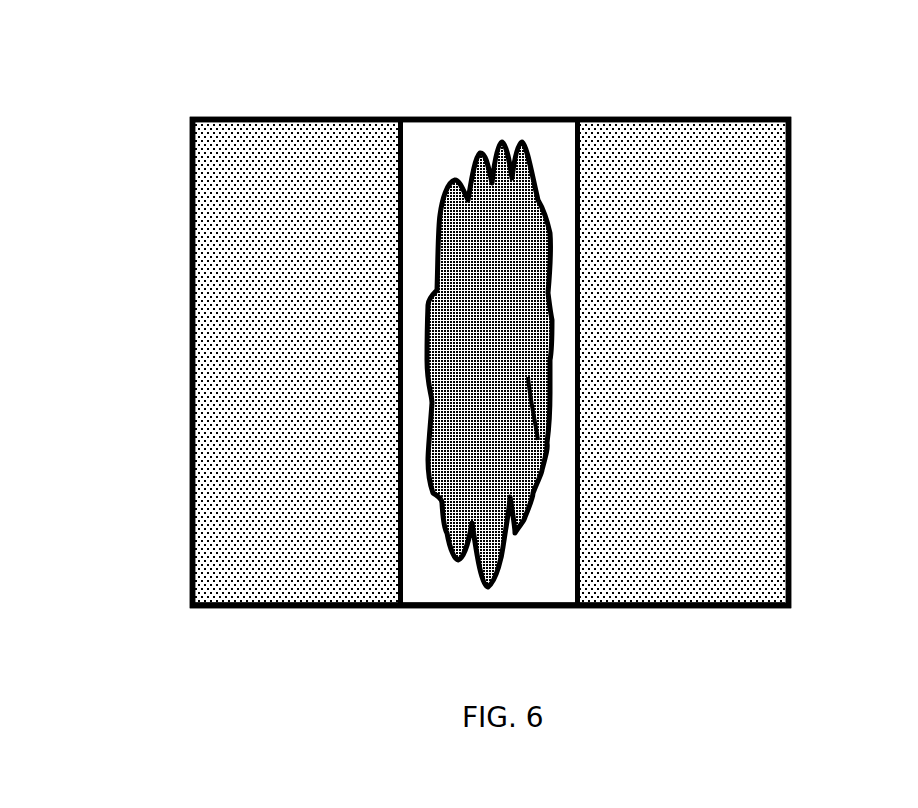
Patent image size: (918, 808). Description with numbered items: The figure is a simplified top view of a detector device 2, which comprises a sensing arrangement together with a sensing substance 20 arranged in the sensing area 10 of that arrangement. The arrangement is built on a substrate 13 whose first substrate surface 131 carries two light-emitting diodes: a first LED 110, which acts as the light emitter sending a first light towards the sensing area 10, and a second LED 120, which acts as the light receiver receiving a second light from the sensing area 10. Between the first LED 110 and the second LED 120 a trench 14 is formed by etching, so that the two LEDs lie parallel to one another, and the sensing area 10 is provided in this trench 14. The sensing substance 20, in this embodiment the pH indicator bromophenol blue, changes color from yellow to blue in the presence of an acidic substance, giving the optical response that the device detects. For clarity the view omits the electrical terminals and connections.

The detector device 2 is at (118, 92).
The sensing area 10 is at (518, 543).
The substrate 13 is at (222, 611).
The first substrate surface 131 is at (443, 590).
The trench 14 is at (426, 170).
The sensing substance 20 is at (510, 295).
The first LED 110 is at (242, 489).
The second LED 120 is at (708, 504).